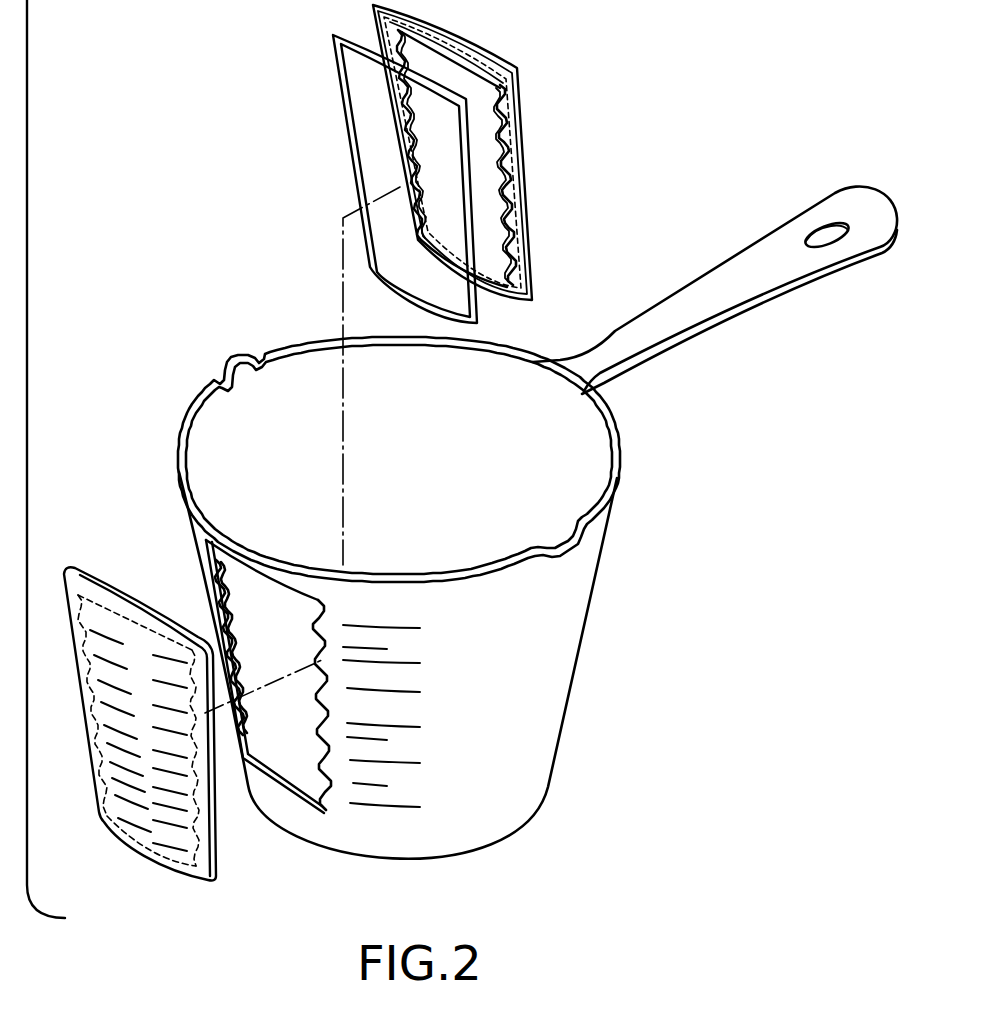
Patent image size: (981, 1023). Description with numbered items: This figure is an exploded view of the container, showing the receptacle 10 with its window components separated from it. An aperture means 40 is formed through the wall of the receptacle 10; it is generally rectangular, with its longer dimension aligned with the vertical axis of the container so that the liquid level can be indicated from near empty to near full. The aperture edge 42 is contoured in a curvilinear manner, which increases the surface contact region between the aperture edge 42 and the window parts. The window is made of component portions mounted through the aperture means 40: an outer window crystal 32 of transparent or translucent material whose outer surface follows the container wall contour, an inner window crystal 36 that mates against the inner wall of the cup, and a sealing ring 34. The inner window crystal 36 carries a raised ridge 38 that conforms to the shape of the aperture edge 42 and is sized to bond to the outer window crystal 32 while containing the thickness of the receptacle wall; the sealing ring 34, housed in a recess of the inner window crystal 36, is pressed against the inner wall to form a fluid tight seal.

The receptacle 10 is at (573, 611).
The outer window crystal 32 is at (150, 856).
The sealing ring 34 is at (332, 72).
The inner window crystal 36 is at (488, 152).
The raised ridge 38 is at (508, 177).
The aperture means 40 is at (273, 727).
The aperture edge 42 is at (221, 608).